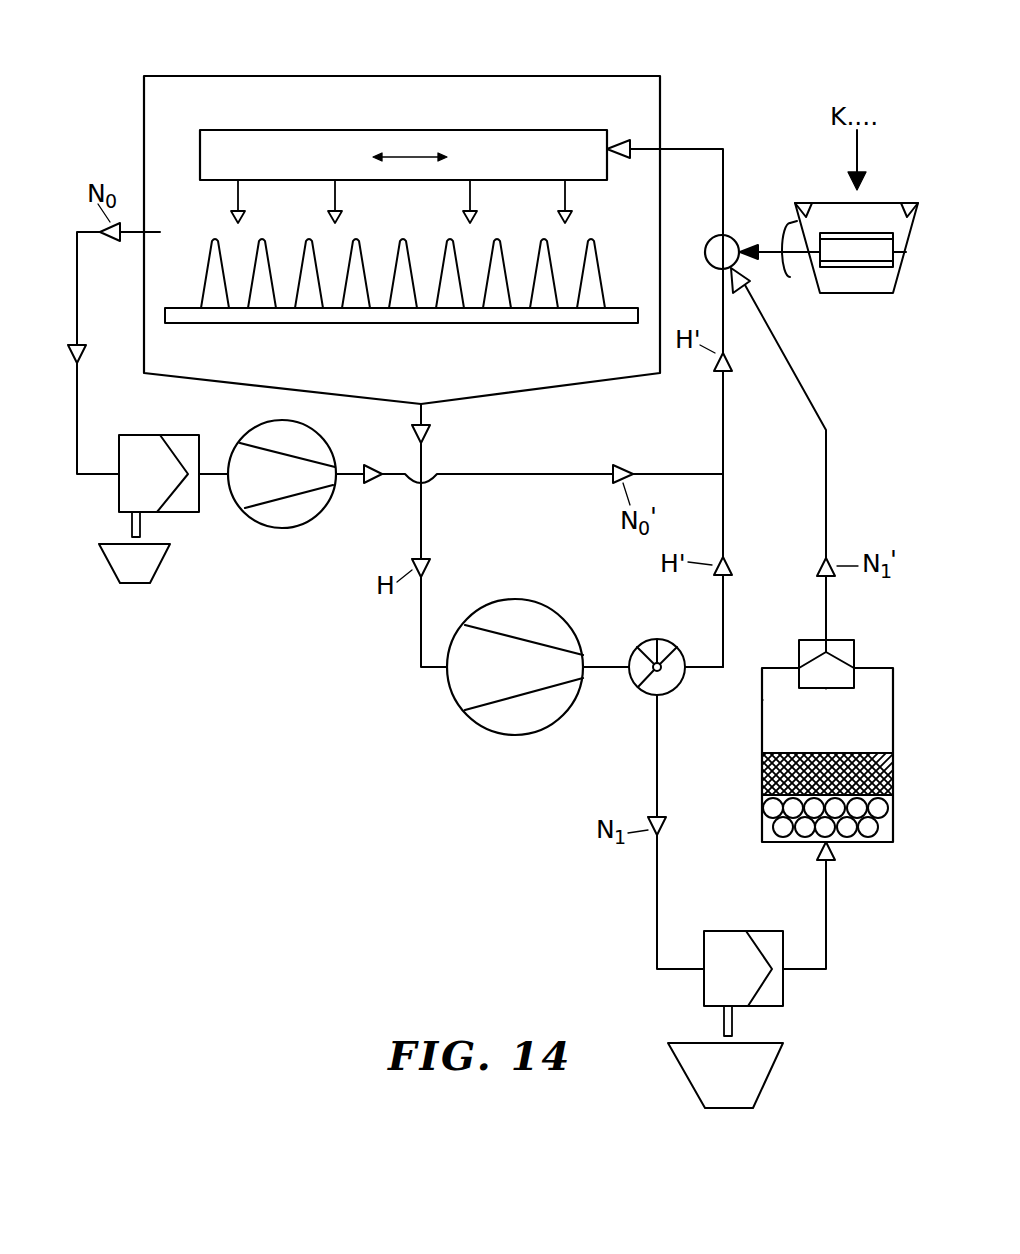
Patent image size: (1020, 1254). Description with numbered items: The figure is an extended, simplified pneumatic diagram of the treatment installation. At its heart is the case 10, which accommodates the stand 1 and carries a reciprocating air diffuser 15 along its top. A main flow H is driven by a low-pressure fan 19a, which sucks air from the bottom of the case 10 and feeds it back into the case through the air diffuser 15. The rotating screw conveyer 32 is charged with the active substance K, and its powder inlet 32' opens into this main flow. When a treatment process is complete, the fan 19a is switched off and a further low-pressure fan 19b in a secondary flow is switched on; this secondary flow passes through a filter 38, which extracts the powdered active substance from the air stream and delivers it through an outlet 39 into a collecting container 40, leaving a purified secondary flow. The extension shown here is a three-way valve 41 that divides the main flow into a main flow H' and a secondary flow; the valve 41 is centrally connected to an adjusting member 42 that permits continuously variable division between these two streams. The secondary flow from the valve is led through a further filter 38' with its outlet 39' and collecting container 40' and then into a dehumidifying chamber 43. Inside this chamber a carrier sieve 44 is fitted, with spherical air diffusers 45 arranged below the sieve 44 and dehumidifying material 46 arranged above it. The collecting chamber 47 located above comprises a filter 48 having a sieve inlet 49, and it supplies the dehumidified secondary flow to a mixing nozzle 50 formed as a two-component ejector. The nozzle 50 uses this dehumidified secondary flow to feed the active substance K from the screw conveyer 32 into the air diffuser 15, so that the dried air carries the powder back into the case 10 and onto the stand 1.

The case 10 is at (608, 100).
The air diffuser 15 is at (300, 150).
The stand 1 is at (190, 279).
The filter 38 is at (147, 446).
The outlet 39 is at (102, 524).
The collecting container 40 is at (159, 575).
The low-pressure fan 19b is at (282, 512).
The low-pressure fan 19a is at (511, 715).
The adjusting member 42 is at (657, 645).
The three-way valve 41 is at (651, 690).
The mixing nozzle 50 is at (715, 240).
The screw conveyer 32 is at (856, 279).
The powder inlet 32' is at (780, 228).
The dehumidifying chamber 43 is at (773, 652).
The filter 48 is at (845, 655).
The sieve inlet 49 is at (833, 690).
The collecting chamber 47 is at (777, 700).
The dehumidifying material 46 is at (778, 752).
The carrier sieve 44 is at (762, 777).
The spherical air diffusers 45 is at (775, 824).
The filter 38' is at (743, 940).
The outlet 39' is at (687, 1020).
The collecting container 40' is at (755, 1075).